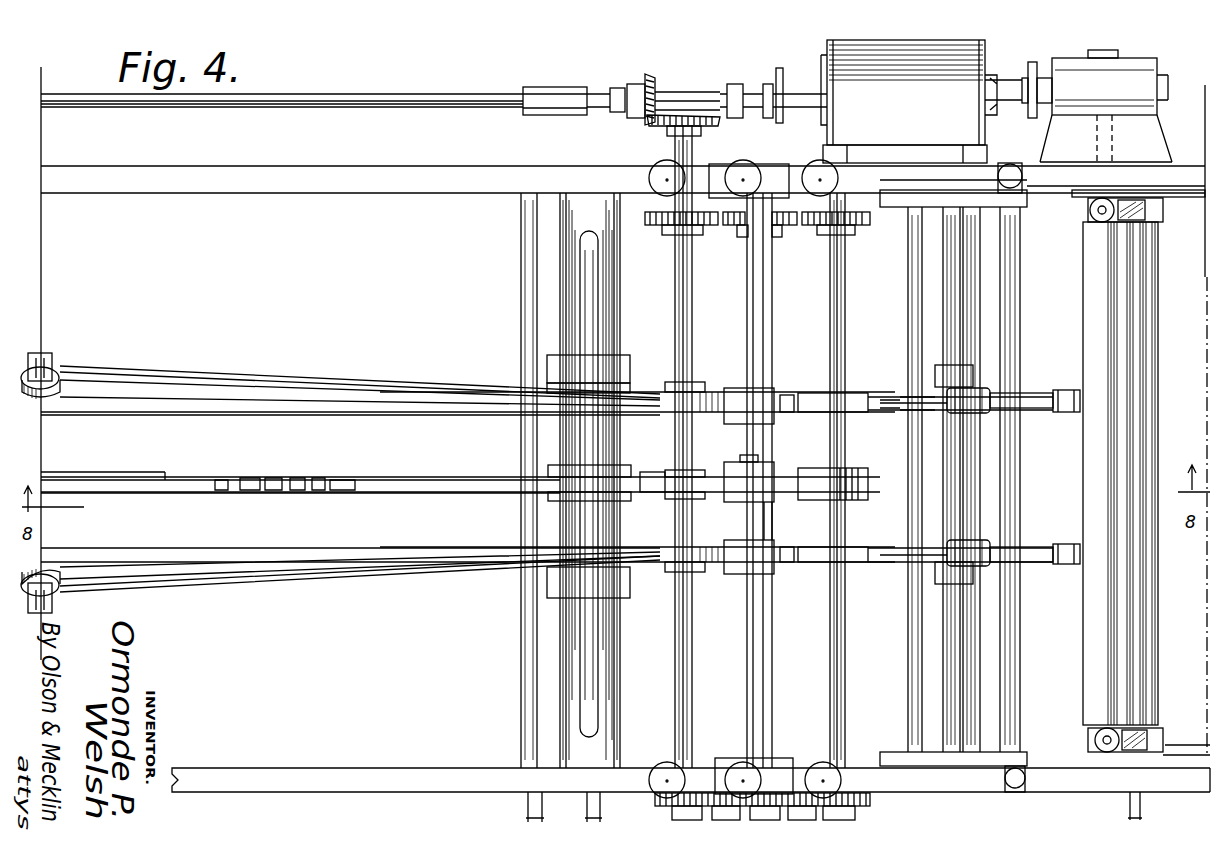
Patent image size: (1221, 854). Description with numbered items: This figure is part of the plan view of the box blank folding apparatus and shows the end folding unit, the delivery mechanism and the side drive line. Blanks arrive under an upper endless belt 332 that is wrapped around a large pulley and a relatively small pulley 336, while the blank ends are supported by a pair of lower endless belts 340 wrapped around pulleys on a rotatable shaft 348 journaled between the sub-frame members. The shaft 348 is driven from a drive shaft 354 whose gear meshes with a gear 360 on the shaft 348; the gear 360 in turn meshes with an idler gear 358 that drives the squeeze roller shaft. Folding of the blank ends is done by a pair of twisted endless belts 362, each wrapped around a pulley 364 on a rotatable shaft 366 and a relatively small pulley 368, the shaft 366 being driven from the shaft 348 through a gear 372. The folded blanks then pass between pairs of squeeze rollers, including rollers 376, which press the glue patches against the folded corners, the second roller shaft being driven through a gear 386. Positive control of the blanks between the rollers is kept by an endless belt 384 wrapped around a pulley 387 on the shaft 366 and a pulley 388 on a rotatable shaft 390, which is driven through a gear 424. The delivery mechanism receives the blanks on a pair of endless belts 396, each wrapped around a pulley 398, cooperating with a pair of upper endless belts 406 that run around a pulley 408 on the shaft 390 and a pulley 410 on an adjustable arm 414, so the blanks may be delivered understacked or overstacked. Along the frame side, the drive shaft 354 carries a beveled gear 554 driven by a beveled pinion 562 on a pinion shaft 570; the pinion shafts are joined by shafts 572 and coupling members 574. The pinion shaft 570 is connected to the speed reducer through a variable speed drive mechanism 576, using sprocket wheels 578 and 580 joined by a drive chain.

The upper endless belt 332 is at (208, 494).
The relatively small pulley 336 is at (242, 478).
The lower endless belts 340 is at (153, 414).
The rotatable shaft 348 is at (686, 680).
The drive shaft 354 is at (670, 144).
The idler gear 358 is at (708, 768).
The gear 360 is at (660, 800).
The twisted endless belts 362 is at (246, 384).
The pulley 364 is at (700, 394).
The rotatable shaft 366 is at (686, 646).
The relatively small pulley 368 is at (62, 380).
The gear 372 is at (650, 226).
The squeeze rollers 376 is at (790, 392).
The endless belt 384 is at (795, 496).
The gear 386 is at (790, 228).
The pulley 387 is at (705, 496).
The pulley 388 is at (404, 478).
The rotatable shaft 390 is at (845, 326).
The endless belts 396 is at (845, 550).
The pulley 398 is at (789, 573).
The upper endless belts 406 is at (797, 415).
The pulley 408 is at (862, 392).
The pulley 410 is at (1060, 546).
The adjustable arm 414 is at (868, 412).
The gear 424 is at (870, 232).
The beveled gear 554 is at (684, 114).
The beveled pinion 562 is at (652, 74).
The pinion shaft 570 is at (672, 95).
The shafts 572 is at (406, 95).
The coupling members 574 is at (532, 87).
The variable speed drive mechanism 576 is at (993, 48).
The sprocket wheel 578 is at (780, 70).
The sprocket wheel 580 is at (1168, 64).